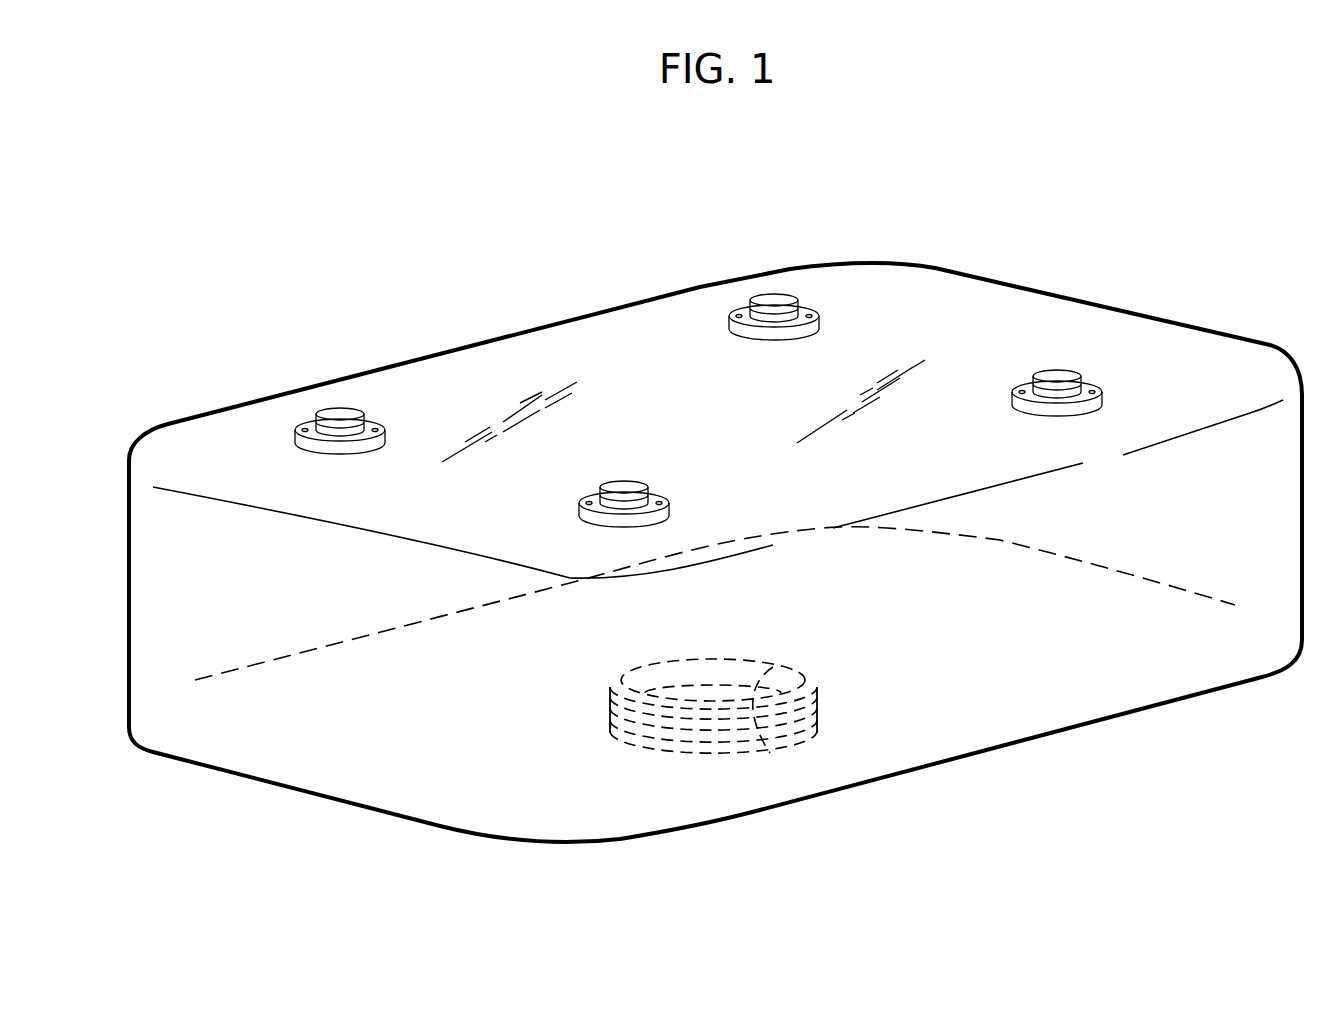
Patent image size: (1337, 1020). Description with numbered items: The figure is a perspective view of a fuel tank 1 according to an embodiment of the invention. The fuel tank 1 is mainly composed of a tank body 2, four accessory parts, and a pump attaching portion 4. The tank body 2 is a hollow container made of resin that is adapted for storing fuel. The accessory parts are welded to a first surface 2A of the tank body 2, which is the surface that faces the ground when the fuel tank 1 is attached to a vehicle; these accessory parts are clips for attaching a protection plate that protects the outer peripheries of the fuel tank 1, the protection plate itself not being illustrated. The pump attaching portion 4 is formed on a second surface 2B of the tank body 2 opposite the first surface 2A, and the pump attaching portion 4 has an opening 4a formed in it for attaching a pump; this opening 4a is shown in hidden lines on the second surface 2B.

The fuel tank 1 is at (715, 481).
The tank body 2 is at (715, 566).
The first surface 2A is at (253, 435).
The second surface 2B is at (900, 776).
The pump attaching portion 4 is at (713, 772).
The opening 4a is at (770, 753).